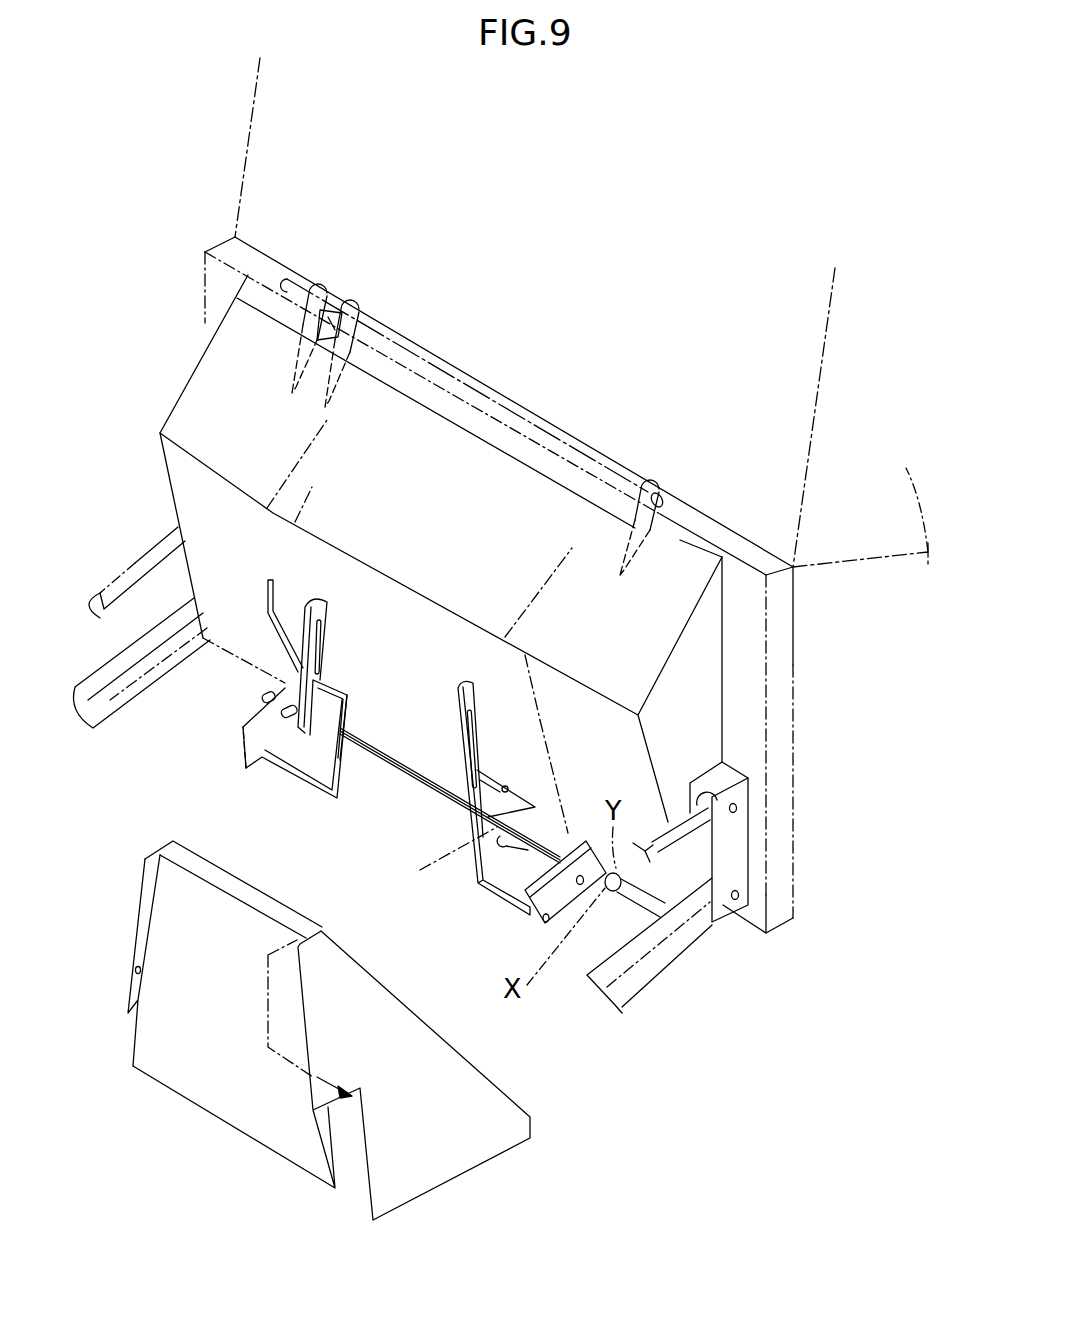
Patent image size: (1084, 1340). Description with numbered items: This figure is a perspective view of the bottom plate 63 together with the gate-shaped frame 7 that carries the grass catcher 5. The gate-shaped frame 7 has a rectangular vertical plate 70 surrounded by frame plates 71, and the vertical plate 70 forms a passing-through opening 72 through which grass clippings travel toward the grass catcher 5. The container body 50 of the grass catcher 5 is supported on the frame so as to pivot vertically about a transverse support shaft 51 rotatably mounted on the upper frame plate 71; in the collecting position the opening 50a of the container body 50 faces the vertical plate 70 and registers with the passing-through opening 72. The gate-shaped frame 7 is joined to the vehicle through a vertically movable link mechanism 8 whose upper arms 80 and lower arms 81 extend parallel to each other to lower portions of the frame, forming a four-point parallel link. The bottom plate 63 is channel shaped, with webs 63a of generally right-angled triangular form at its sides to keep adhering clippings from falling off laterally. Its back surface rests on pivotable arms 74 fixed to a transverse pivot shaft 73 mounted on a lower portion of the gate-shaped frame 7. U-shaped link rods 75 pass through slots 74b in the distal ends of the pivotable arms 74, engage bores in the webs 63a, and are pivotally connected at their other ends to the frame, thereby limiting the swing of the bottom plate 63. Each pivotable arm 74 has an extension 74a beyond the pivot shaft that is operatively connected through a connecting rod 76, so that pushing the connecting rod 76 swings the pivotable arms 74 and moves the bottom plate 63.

The grass catcher 5 is at (233, 198).
The gate-shaped frame 7 is at (191, 298).
The vertically movable link mechanism 8 is at (128, 726).
The container body 50 is at (262, 102).
The opening 50a is at (813, 570).
The transverse support shaft 51 is at (482, 375).
The bottom plate 63 is at (190, 895).
The web 63a is at (138, 1000).
The vertical plate 70 is at (215, 395).
The frame plate 71 is at (205, 320).
The passing-through opening 72 is at (340, 520).
The transverse pivot shaft 73 is at (373, 768).
The pivotable arm 74 is at (347, 576).
The extension 74a is at (345, 712).
The slot 74b is at (325, 625).
The link rod 75 is at (262, 760).
The connecting rod 76 is at (268, 600).
The upper arm 80 is at (145, 562).
The lower arm 81 is at (150, 680).